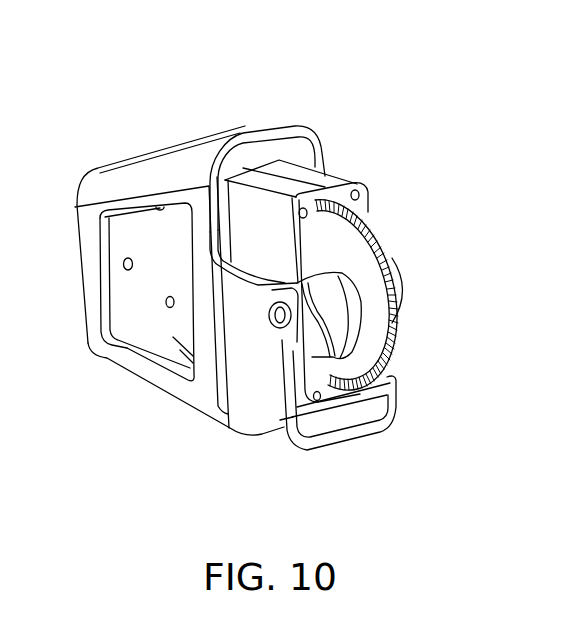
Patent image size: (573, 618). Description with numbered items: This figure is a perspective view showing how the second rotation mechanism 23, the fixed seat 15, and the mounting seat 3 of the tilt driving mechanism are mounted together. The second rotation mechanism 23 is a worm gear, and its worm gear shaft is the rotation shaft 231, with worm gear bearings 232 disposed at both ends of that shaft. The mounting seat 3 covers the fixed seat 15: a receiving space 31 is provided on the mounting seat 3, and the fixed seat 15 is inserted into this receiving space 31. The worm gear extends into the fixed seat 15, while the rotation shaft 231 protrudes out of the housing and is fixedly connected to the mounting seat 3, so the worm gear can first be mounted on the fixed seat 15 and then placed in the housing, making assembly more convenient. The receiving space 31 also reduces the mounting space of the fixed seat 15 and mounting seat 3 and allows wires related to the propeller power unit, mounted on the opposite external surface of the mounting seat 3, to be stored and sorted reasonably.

The mounting seat 3 is at (163, 175).
The receiving space 31 is at (178, 322).
The fixed seat 15 is at (274, 236).
The second rotation mechanism 23 is at (368, 292).
The rotation shaft 231 is at (335, 300).
The worm gear bearings 232 is at (403, 283).